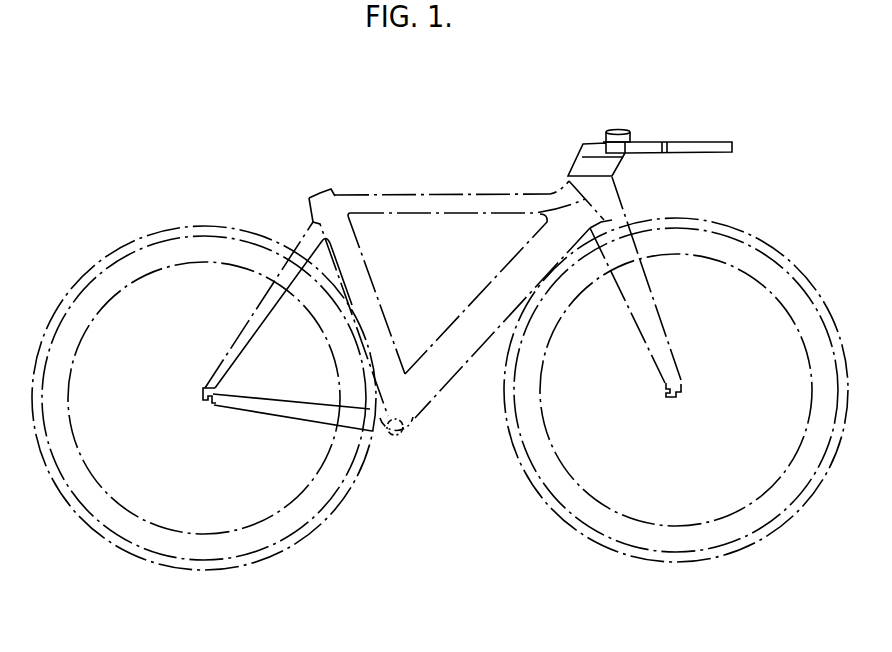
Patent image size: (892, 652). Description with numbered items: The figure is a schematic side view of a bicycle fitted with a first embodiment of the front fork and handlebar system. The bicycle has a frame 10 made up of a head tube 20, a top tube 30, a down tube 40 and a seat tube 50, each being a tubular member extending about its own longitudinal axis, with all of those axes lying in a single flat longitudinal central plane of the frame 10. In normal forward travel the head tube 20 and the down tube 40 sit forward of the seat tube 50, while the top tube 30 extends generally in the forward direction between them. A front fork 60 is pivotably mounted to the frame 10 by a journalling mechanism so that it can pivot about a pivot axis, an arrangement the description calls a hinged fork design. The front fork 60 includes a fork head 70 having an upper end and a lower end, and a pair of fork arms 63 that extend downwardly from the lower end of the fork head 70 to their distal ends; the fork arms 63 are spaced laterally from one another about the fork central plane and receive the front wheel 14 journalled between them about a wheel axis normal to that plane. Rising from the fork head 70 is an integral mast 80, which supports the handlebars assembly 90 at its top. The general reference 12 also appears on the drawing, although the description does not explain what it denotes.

The frame 10 is at (447, 158).
The handlebar assembly 12 is at (815, 133).
The front wheel 14 is at (782, 497).
The head tube 20 is at (538, 212).
The top tube 30 is at (390, 192).
The down tube 40 is at (446, 338).
The seat tube 50 is at (356, 252).
The front fork 60 is at (835, 168).
The fork arms 63 is at (656, 330).
The fork head 70 is at (618, 202).
The mast 80 is at (626, 159).
The handlebars assembly 90 is at (598, 142).